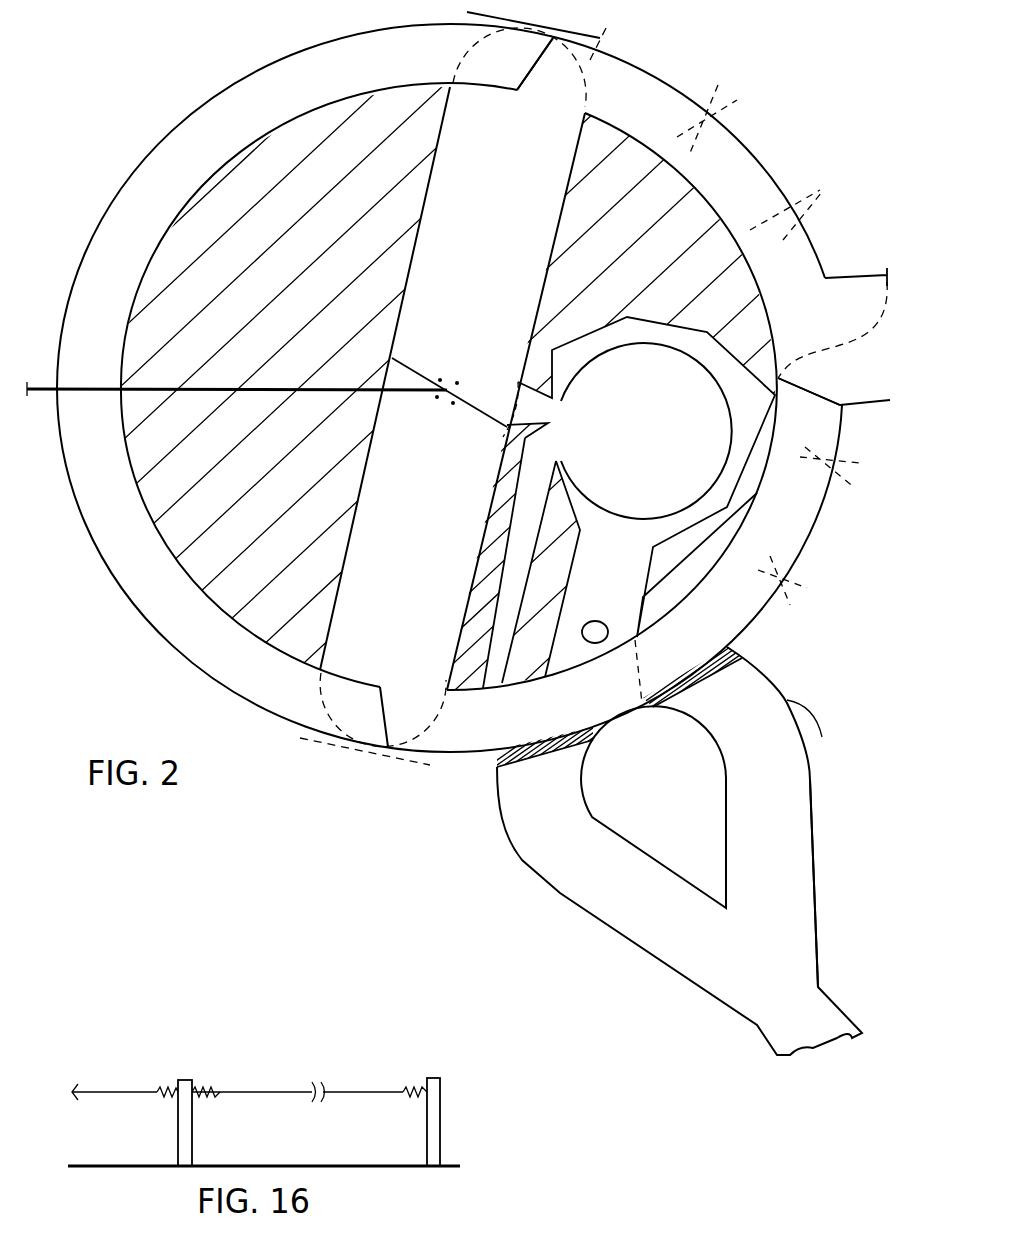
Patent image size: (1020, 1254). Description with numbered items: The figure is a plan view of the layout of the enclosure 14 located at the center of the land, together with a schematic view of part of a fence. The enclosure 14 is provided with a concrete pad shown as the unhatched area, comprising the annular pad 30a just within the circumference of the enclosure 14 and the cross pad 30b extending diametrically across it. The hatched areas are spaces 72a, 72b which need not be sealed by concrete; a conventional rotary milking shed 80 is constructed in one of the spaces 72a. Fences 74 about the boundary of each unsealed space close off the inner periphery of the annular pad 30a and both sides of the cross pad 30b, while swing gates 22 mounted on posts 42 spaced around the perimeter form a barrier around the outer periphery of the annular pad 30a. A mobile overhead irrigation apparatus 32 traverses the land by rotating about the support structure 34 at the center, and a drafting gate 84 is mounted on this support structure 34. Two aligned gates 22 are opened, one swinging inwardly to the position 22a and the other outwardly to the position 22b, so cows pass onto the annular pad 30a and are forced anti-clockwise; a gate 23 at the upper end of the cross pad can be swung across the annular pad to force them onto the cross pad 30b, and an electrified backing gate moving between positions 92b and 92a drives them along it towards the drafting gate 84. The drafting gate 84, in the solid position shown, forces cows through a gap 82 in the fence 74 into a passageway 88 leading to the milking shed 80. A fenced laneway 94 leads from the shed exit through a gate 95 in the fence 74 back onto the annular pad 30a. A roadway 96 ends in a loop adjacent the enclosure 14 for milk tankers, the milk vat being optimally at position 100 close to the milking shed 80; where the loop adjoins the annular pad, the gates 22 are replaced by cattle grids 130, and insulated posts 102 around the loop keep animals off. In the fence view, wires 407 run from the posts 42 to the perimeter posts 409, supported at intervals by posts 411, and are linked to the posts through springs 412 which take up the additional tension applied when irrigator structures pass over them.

In FIG. 2, the enclosure 14 is at (182, 96).
In FIG. 2, the posts 42 is at (83, 253).
In FIG. 16, the posts 42 is at (480, 1122).
In FIG. 2, the gates 22 is at (637, 70).
In FIG. 2, the fences 74 is at (158, 257).
In FIG. 2, the space 72b is at (157, 285).
In FIG. 2, the space 72a is at (560, 248).
In FIG. 2, the cross pad 30b is at (537, 210).
In FIG. 2, the gate 23 is at (548, 52).
In FIG. 2, the backing gate position 92b is at (536, 30).
In FIG. 2, the backing gate position 92a is at (320, 743).
In FIG. 2, the mobile overhead irrigation apparatus 32 is at (108, 395).
In FIG. 2, the drafting gate 84 is at (424, 362).
In FIG. 2, the support structure 34 is at (438, 409).
In FIG. 2, the gap 82 is at (518, 394).
In FIG. 2, the passageway 88 is at (503, 445).
In FIG. 2, the fenced laneway 94 is at (520, 513).
In FIG. 2, the gate 95 is at (483, 690).
In FIG. 2, the rotary milking shed 80 is at (730, 480).
In FIG. 2, the milk vat position 100 is at (615, 613).
In FIG. 2, the annular pad 30a is at (783, 243).
In FIG. 2, the gate position 22b is at (845, 273).
In FIG. 2, the gate position 22a is at (796, 391).
In FIG. 2, the cattle grids 130 is at (573, 745).
In FIG. 2, the roadway 96 is at (783, 1035).
In FIG. 2, the insulated posts 102 is at (808, 775).
In FIG. 16, the wires 407 is at (236, 1075).
In FIG. 16, the springs 412 is at (279, 1094).
In FIG. 16, the posts 411 is at (198, 1076).
In FIG. 16, the posts 409 is at (440, 1126).